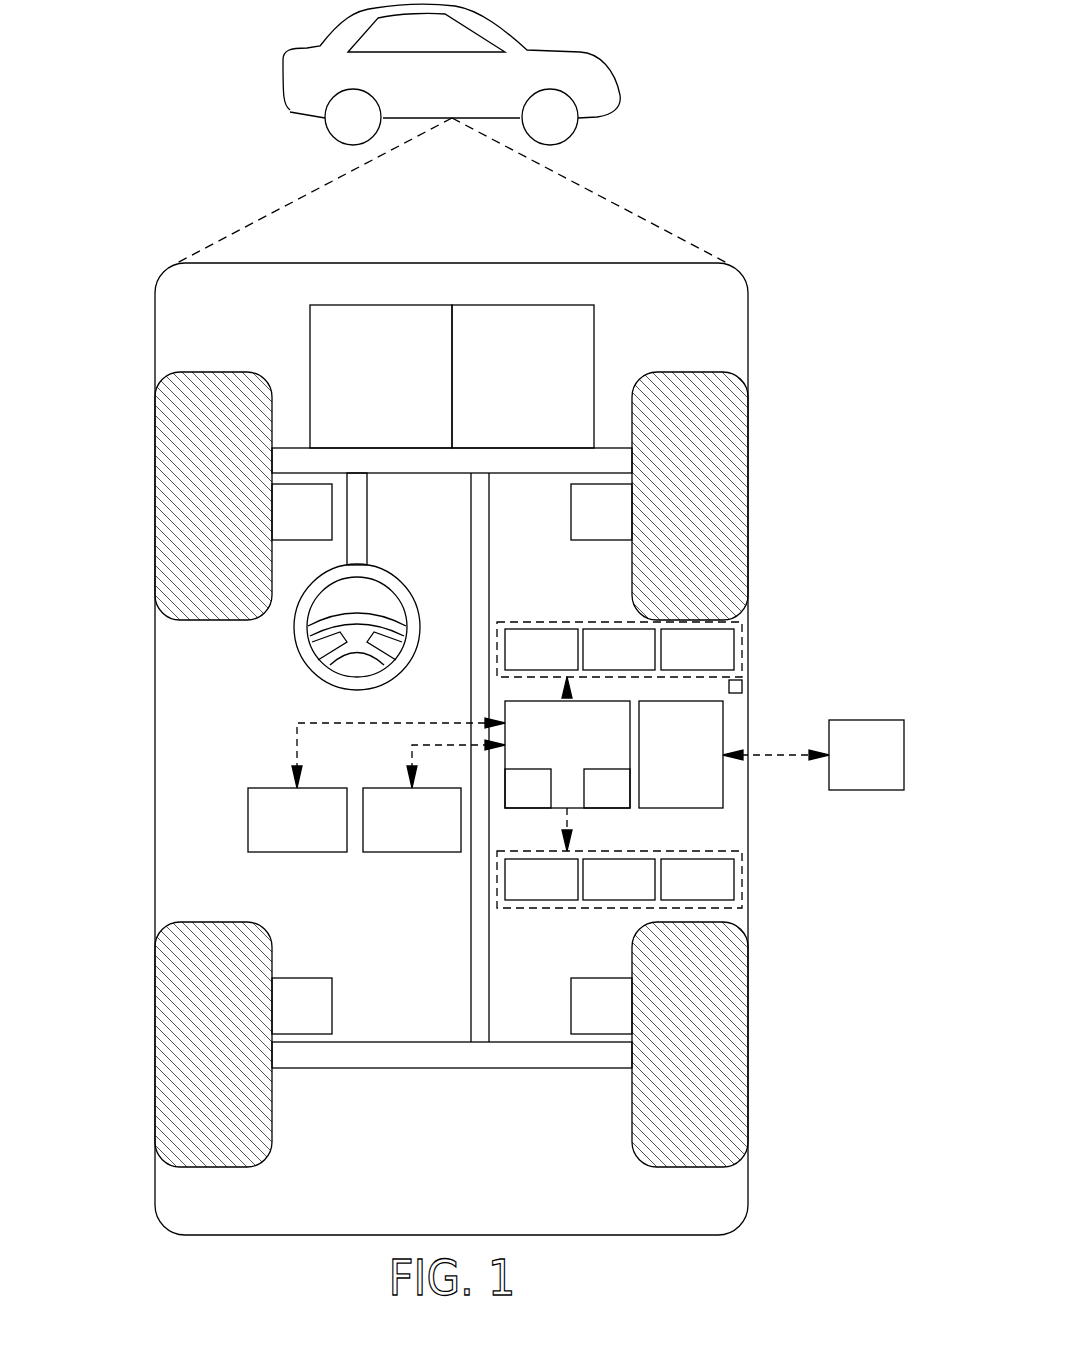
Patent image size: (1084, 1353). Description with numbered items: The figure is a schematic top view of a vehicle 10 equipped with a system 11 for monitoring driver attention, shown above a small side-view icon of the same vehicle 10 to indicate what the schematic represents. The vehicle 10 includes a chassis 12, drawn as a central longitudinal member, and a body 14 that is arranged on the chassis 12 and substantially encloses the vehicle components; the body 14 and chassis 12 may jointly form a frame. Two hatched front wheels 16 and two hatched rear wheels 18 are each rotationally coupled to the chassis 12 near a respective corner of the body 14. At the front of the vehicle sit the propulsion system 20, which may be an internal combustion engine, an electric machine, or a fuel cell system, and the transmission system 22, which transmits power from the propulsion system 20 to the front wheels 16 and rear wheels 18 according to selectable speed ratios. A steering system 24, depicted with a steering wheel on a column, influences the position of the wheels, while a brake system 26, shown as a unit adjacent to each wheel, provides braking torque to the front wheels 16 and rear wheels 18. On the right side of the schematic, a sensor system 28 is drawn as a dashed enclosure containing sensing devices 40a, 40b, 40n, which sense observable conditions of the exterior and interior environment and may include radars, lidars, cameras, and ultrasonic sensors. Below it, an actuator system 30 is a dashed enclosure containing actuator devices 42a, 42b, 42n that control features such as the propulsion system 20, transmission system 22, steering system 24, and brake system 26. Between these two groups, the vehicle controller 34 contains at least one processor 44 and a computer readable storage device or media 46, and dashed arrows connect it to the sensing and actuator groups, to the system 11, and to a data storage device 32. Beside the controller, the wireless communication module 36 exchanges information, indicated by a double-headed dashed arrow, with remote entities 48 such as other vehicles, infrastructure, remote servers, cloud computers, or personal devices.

The vehicle 10 is at (438, 95).
The system for monitoring driver attention 11 is at (283, 833).
The chassis 12 is at (471, 950).
The body 14 is at (155, 750).
The front wheels 16 is at (215, 372).
The rear wheels 18 is at (213, 1167).
The propulsion system 20 is at (367, 390).
The transmission system 22 is at (508, 390).
The steering system 24 is at (392, 514).
The brake system 26 is at (288, 525).
The sensor system 28 is at (585, 622).
The actuator system 30 is at (590, 908).
The data storage device 32 is at (398, 833).
The vehicle controller 34 is at (553, 748).
The wireless communication module 36 is at (667, 768).
The sensing device 40a is at (522, 663).
The sensing device 40b is at (600, 663).
The sensing device 40n is at (678, 663).
The actuator device 42a is at (522, 893).
The actuator device 42b is at (600, 893).
The actuator device 42n is at (678, 893).
The processor 44 is at (514, 803).
The computer readable storage device or media 46 is at (593, 803).
The remote entities 48 is at (852, 768).